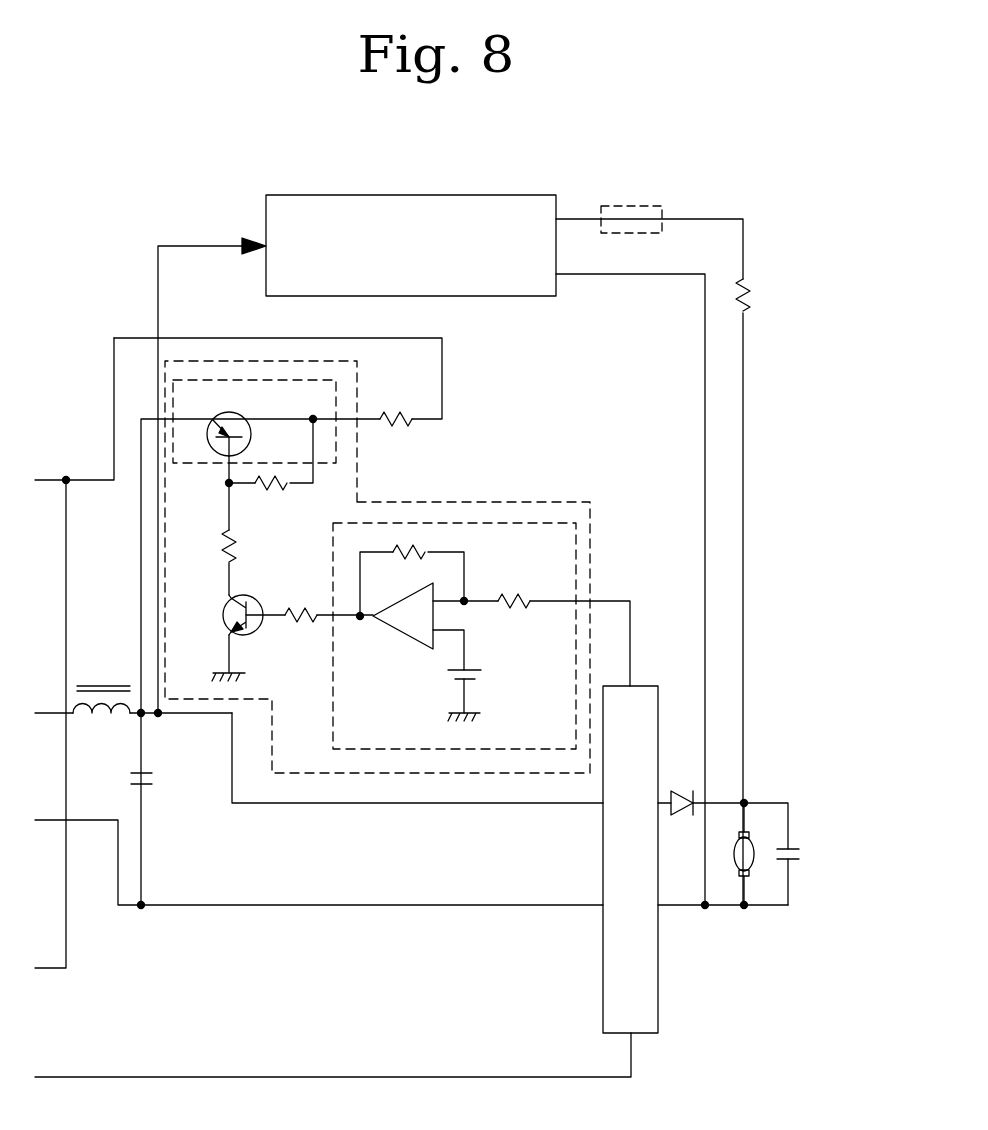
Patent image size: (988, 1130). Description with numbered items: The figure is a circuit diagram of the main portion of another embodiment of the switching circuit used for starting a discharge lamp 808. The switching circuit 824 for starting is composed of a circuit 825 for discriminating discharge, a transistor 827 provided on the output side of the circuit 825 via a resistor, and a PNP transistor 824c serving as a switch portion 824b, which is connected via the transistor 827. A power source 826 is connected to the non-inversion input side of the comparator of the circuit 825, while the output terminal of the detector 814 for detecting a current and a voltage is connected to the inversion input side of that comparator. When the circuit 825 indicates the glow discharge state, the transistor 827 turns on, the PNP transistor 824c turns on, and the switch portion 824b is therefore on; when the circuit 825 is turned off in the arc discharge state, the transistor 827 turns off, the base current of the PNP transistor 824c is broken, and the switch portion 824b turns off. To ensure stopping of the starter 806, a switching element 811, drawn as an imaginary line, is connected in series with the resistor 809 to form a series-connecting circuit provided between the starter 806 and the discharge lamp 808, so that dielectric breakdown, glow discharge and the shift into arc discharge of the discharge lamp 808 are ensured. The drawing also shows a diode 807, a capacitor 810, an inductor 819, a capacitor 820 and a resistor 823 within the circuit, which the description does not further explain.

The starter 806 is at (405, 195).
The diode 807 is at (683, 790).
The discharge lamp 808 is at (750, 860).
The resistor 809 is at (752, 292).
The capacitor 810 is at (802, 852).
The switching element 811 is at (630, 206).
The detector for detecting a current and a voltage 814 is at (648, 684).
The inductor 819 is at (103, 718).
The capacitor 820 is at (162, 780).
The resistor 823 is at (397, 427).
The switching circuit for starting 824 is at (548, 490).
The switch portion 824b is at (345, 390).
The PNP transistor 824c is at (234, 412).
The circuit for discriminating discharge 825 is at (470, 523).
The power source 826 is at (485, 664).
The transistor 827 is at (257, 630).